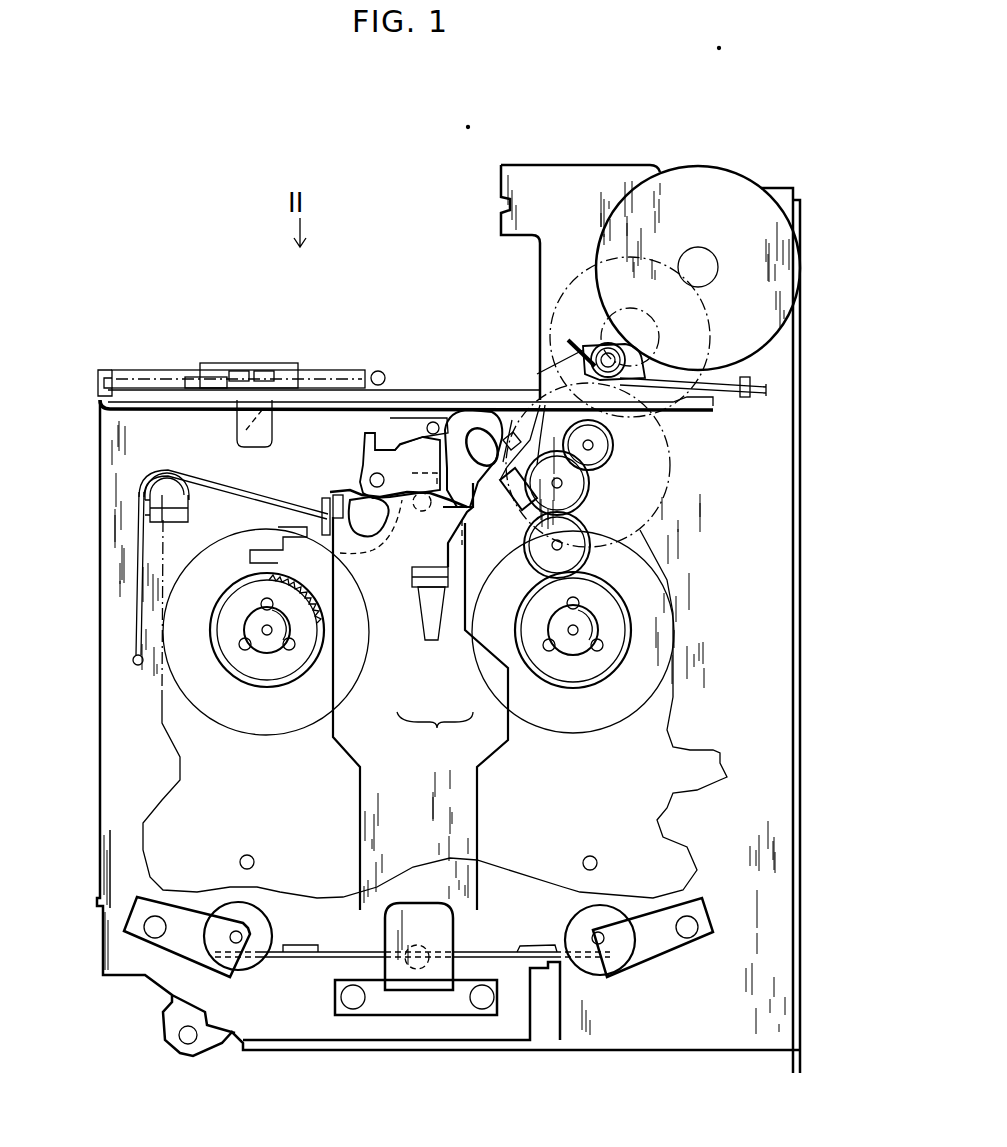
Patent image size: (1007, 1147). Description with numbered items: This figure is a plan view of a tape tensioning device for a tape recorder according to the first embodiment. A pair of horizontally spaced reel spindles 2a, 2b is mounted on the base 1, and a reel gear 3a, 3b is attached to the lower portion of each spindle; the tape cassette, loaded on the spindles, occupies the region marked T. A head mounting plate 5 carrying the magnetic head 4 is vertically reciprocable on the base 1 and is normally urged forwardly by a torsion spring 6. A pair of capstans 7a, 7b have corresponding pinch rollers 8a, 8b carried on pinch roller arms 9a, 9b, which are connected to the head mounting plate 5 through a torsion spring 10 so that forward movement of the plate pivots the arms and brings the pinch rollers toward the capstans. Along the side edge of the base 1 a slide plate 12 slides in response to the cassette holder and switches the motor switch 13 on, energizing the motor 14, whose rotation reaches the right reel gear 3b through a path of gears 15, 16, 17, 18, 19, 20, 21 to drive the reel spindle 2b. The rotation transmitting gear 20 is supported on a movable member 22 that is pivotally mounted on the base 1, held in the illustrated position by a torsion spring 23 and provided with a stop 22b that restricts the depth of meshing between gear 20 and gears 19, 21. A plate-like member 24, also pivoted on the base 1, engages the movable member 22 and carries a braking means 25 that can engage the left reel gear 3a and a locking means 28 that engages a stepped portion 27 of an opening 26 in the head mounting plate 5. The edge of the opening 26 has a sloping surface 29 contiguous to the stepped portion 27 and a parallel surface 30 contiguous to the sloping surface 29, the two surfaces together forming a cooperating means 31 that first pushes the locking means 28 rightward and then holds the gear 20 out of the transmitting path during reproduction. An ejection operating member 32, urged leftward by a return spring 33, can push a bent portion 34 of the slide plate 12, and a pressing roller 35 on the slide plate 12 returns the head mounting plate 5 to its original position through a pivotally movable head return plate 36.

The base 1 is at (796, 606).
The reel spindle 2a is at (267, 655).
The reel spindle 2b is at (566, 656).
The reel gear 3a is at (240, 680).
The reel gear 3b is at (608, 682).
The magnetic head 4 is at (428, 992).
The head mounting plate 5 is at (497, 1032).
The torsion spring 6 is at (134, 604).
The capstan 7a is at (252, 857).
The capstan 7b is at (594, 857).
The pinch roller 8a is at (272, 924).
The pinch roller 8b is at (566, 926).
The pinch roller arm 9a is at (152, 980).
The pinch roller arm 9b is at (660, 962).
The torsion spring 10 is at (300, 960).
The slide plate 12 is at (288, 411).
The motor switch 13 is at (266, 362).
The motor 14 is at (800, 262).
The gear 15 is at (706, 248).
The gear 16 is at (580, 284).
The gear 17 is at (665, 346).
The gear 18 is at (670, 464).
The gear 19 is at (614, 446).
The rotation transmitting gear 20 is at (590, 486).
The gear 21 is at (592, 558).
The movable member 22 is at (536, 385).
The stop 22b is at (522, 498).
The torsion spring 23 is at (770, 390).
The plate-like member 24 is at (464, 424).
The braking means 25 is at (316, 633).
The opening 26 is at (442, 592).
The stepped portion 27 is at (434, 612).
The locking means 28 is at (412, 582).
The sloping surface 29 is at (452, 630).
The parallel surface 30 is at (432, 645).
The cooperating means 31 is at (435, 734).
The ejection operating member 32 is at (96, 396).
The return spring 33 is at (150, 368).
The bent portion 34 is at (236, 428).
The pressing roller 35 is at (388, 425).
The head return plate 36 is at (362, 472).
The tape cassette T is at (698, 752).